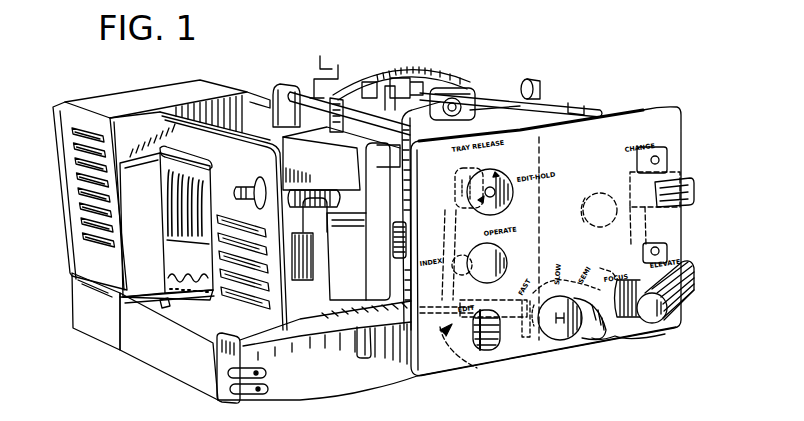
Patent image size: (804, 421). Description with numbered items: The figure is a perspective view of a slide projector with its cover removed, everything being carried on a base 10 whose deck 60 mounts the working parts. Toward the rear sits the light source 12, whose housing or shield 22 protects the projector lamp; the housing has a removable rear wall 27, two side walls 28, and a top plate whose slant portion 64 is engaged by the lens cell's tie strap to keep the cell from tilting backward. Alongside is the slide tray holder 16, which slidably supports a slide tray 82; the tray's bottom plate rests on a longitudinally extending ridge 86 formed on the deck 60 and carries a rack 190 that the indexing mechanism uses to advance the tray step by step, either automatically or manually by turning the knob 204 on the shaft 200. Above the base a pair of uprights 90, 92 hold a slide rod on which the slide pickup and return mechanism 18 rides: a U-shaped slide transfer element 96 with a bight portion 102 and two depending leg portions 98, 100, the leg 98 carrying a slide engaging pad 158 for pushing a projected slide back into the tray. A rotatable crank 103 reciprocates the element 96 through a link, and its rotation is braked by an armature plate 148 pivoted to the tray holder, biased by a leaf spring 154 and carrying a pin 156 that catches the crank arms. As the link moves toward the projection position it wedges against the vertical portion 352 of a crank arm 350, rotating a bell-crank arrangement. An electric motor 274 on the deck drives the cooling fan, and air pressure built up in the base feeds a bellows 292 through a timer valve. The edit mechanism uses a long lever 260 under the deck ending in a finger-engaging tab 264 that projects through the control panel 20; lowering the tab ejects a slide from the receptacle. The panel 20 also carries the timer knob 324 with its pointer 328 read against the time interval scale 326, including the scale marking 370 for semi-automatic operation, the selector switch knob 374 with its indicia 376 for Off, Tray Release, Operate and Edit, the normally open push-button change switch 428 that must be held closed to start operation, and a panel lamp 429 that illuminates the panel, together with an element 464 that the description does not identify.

The base 10 is at (80, 340).
The light source 12 is at (103, 97).
The slide tray holder 16 is at (274, 144).
The slide pickup and return mechanism 18 is at (433, 68).
The control panel 20 is at (638, 118).
The housing or shield 22 is at (148, 98).
The removable rear wall 27 is at (84, 250).
The side walls 28 is at (137, 127).
The deck 60 is at (200, 323).
The slant portion 64 is at (253, 97).
The slide tray 82 is at (146, 218).
The longitudinally extending ridge 86 is at (200, 300).
The upright 90 is at (271, 93).
The upright 92 is at (544, 133).
The U-shaped slide transfer element 96 is at (370, 80).
The leg portion 98 is at (453, 184).
The leg portion 100 is at (341, 158).
The bight portion 102 is at (367, 147).
The rotatable crank 103 is at (468, 100).
The armature plate 148 is at (538, 96).
The leaf spring 154 is at (572, 102).
The pin 156 is at (531, 95).
The slide engaging pad 158 is at (376, 214).
The rack 190 is at (193, 273).
The shaft 200 is at (460, 297).
The knob 204 is at (500, 259).
The lever 260 is at (452, 351).
The finger-engaging tab 264 is at (496, 350).
The electric motor 274 is at (330, 257).
The bellows 292 is at (393, 72).
The knob 324 is at (570, 341).
The time interval scale 326 is at (570, 262).
The pointer 328 is at (610, 338).
The crank arm 350 is at (332, 64).
The vertical portion 352 is at (345, 66).
The scale marking 370 is at (646, 326).
The knob 374 is at (500, 192).
The indicia 376 is at (486, 147).
The change switch 428 is at (633, 163).
The panel lamp 429 is at (602, 200).
The support 464 is at (322, 416).